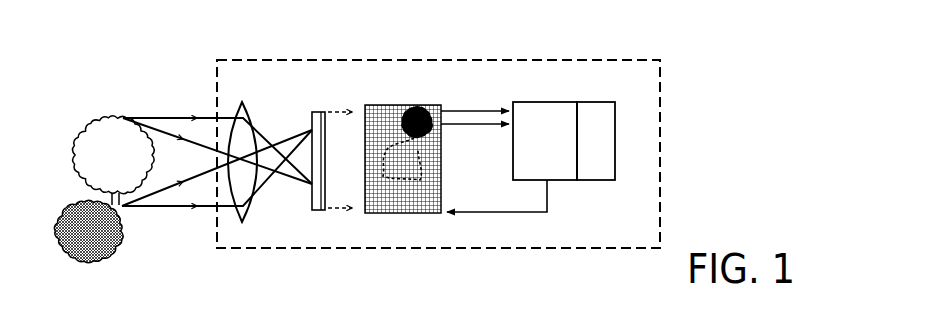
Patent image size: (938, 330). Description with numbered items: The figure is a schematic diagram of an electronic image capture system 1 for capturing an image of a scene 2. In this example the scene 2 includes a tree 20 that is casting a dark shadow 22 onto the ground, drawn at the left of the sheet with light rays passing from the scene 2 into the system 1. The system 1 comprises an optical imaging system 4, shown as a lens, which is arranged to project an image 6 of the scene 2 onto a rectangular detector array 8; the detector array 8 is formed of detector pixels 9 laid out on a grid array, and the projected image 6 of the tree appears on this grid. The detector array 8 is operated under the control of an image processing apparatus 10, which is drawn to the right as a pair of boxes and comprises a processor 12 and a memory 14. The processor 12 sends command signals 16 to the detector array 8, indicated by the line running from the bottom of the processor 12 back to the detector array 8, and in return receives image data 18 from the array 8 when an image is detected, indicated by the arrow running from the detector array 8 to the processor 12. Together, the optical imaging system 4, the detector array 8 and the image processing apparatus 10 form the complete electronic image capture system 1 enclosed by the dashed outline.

The electronic image capture system 1 is at (303, 58).
The scene 2 is at (108, 150).
The optical imaging system 4 is at (246, 112).
The image 6 is at (422, 180).
The detector array 8 is at (378, 213).
The detector pixels 9 is at (403, 174).
The image processing apparatus 10 is at (576, 96).
The processor 12 is at (528, 104).
The memory 14 is at (603, 106).
The command signals 16 is at (517, 213).
The image data 18 is at (478, 113).
The tree 20 is at (97, 150).
The dark shadow 22 is at (104, 243).